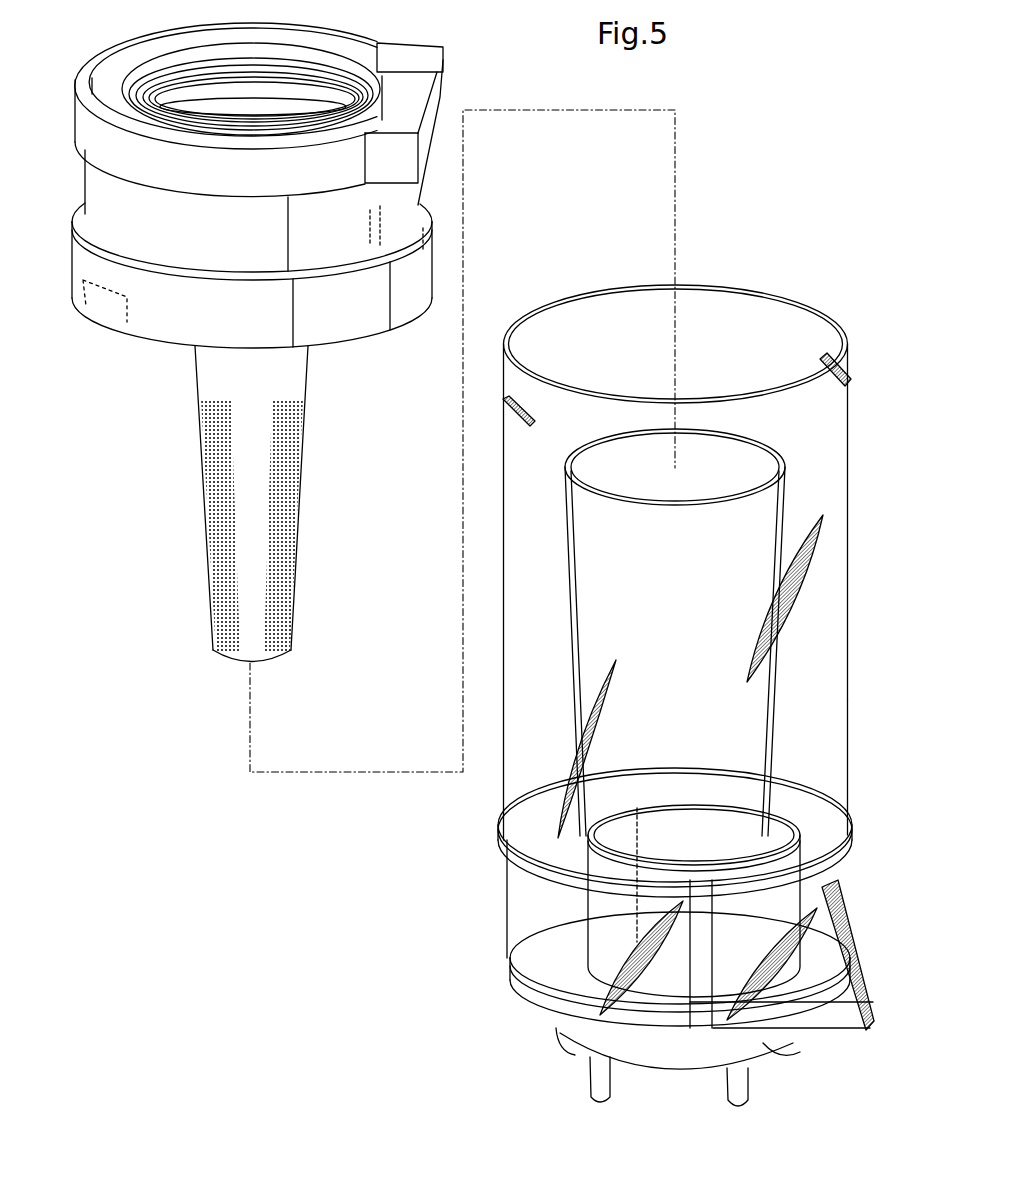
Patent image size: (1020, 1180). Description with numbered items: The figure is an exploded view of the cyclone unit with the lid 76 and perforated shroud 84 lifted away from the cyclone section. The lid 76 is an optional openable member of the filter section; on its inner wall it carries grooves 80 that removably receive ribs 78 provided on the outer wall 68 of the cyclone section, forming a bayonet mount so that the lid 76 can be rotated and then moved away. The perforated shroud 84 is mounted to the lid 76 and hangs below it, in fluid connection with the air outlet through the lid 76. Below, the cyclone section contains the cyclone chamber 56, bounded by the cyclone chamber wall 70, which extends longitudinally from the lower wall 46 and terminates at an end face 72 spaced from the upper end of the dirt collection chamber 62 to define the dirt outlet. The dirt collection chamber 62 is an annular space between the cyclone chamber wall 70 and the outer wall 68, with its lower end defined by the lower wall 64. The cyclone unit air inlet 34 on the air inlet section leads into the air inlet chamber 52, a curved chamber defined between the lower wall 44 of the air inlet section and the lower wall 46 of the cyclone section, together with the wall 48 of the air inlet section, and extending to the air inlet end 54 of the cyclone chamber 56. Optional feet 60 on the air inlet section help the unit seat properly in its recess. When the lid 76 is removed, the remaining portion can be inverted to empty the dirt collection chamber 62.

The cyclone unit air inlet 34 is at (838, 1018).
The lower wall of air inlet section 44 is at (518, 1002).
The lower wall of cyclone section 46 is at (502, 848).
The lower chamber wall 48 is at (505, 907).
The air inlet chamber 52 is at (533, 913).
The air inlet end of cyclone chamber 54 is at (717, 830).
The cyclone chamber 56 is at (737, 580).
The feet 60 is at (740, 1097).
The dirt collection chamber 62 is at (812, 748).
The lower wall 64 is at (533, 825).
The outer wall 68 is at (847, 633).
The cyclone chamber wall 70 is at (790, 510).
The end face 72 is at (780, 458).
The lid 76 is at (85, 196).
The ribs 78 is at (510, 418).
The grooves 80 is at (80, 303).
The perforated shroud 84 is at (207, 383).